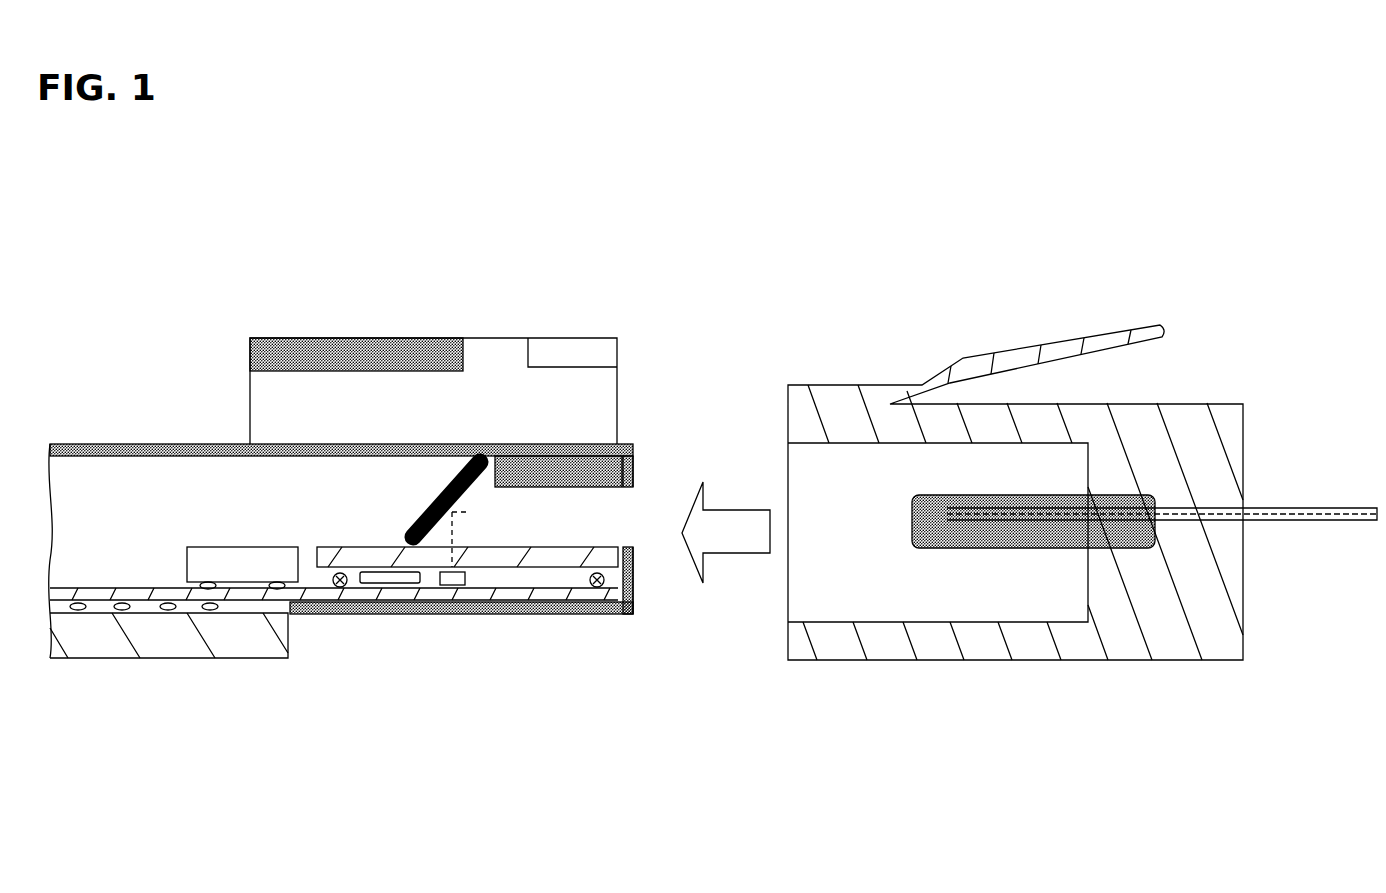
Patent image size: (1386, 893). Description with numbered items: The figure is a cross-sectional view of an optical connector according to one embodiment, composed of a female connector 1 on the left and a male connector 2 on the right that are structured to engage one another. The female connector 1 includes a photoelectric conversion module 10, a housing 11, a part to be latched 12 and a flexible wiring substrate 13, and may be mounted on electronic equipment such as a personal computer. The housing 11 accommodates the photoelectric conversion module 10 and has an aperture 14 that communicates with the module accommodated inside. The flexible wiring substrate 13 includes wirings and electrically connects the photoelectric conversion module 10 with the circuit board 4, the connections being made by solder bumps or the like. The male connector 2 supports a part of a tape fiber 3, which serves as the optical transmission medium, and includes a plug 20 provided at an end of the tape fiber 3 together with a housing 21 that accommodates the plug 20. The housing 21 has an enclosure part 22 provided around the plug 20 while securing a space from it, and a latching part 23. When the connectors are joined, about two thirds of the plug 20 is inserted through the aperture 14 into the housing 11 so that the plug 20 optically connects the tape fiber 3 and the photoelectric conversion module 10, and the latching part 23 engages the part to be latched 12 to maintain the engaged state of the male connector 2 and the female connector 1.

The female connector 1 is at (160, 268).
The male connector 2 is at (930, 262).
The tape fiber 3 is at (1340, 508).
The circuit board 4 is at (160, 658).
The photoelectric conversion module 10 is at (510, 580).
The housing 11 is at (162, 444).
The part to be latched 12 is at (371, 337).
The flexible wiring substrate 13 is at (437, 600).
The aperture 14 is at (650, 495).
The plug 20 is at (1018, 548).
The housing 21 is at (1226, 403).
The enclosure part 22 is at (935, 660).
The latching part 23 is at (1056, 342).